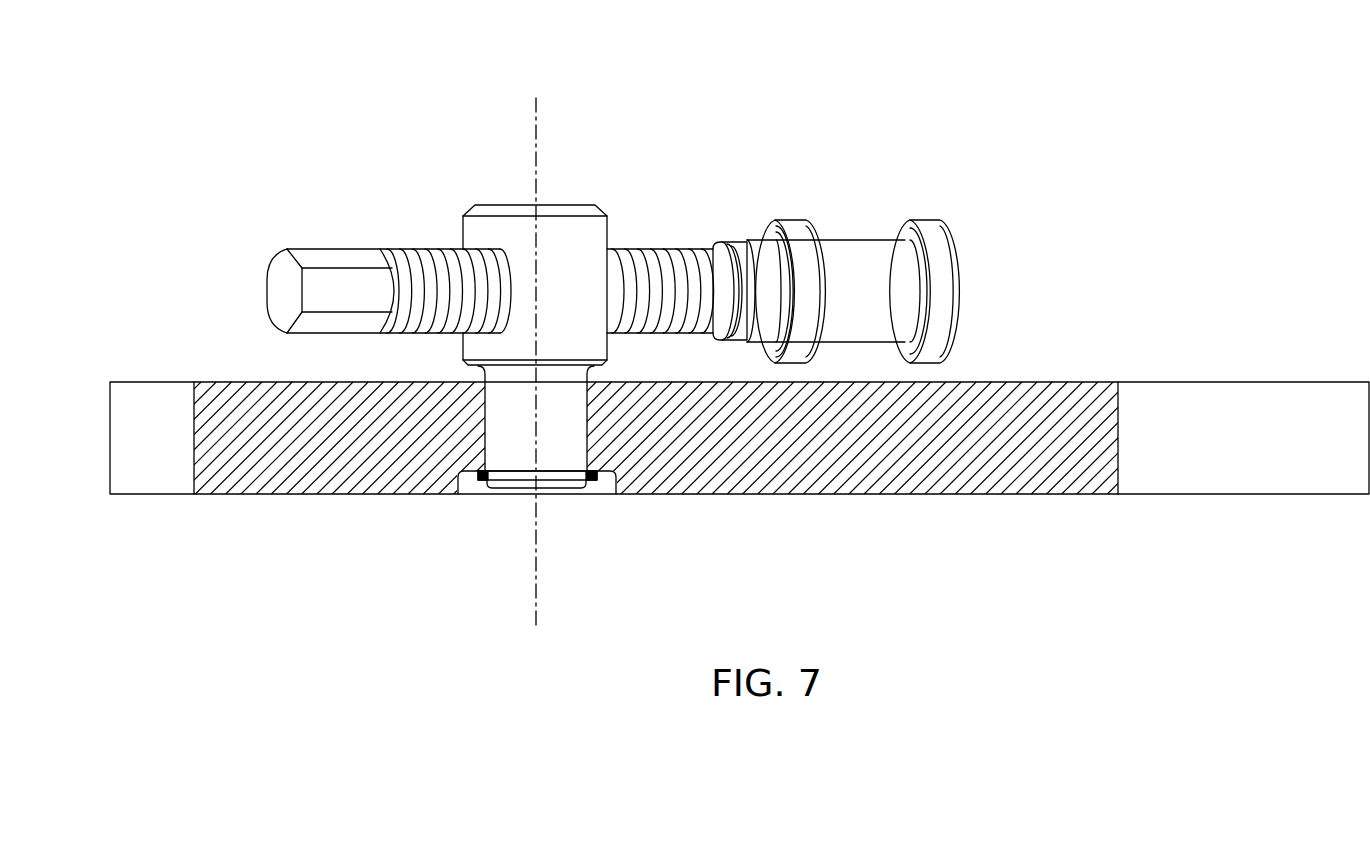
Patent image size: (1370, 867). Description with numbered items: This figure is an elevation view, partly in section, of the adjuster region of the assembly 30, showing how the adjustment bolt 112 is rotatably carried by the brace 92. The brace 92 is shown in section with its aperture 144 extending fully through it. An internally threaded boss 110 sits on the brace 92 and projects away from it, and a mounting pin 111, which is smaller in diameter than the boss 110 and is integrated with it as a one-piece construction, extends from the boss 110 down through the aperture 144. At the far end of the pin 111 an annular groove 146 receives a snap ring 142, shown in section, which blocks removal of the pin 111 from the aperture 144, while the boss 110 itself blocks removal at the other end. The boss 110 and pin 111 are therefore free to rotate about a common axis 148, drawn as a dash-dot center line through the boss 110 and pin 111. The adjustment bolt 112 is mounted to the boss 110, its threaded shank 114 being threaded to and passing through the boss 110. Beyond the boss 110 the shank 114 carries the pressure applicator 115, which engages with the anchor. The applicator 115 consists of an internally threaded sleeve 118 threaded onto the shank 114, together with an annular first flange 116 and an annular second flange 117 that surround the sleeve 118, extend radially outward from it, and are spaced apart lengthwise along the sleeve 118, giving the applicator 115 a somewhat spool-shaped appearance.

The fastener assembly 30 is at (323, 118).
The brace 92 is at (142, 468).
The internally threaded boss 110 is at (505, 227).
The mounting pin 111 is at (550, 483).
The adjustment bolt 112 is at (407, 240).
The shank 114 is at (645, 247).
The pressure applicator 115 is at (842, 213).
The annular first flange 116 is at (932, 227).
The annular second flange 117 is at (800, 225).
The internally threaded sleeve 118 is at (745, 250).
The snap ring 142 is at (592, 478).
The aperture 144 is at (583, 418).
The annular groove 146 is at (515, 475).
The axis 148 is at (535, 98).